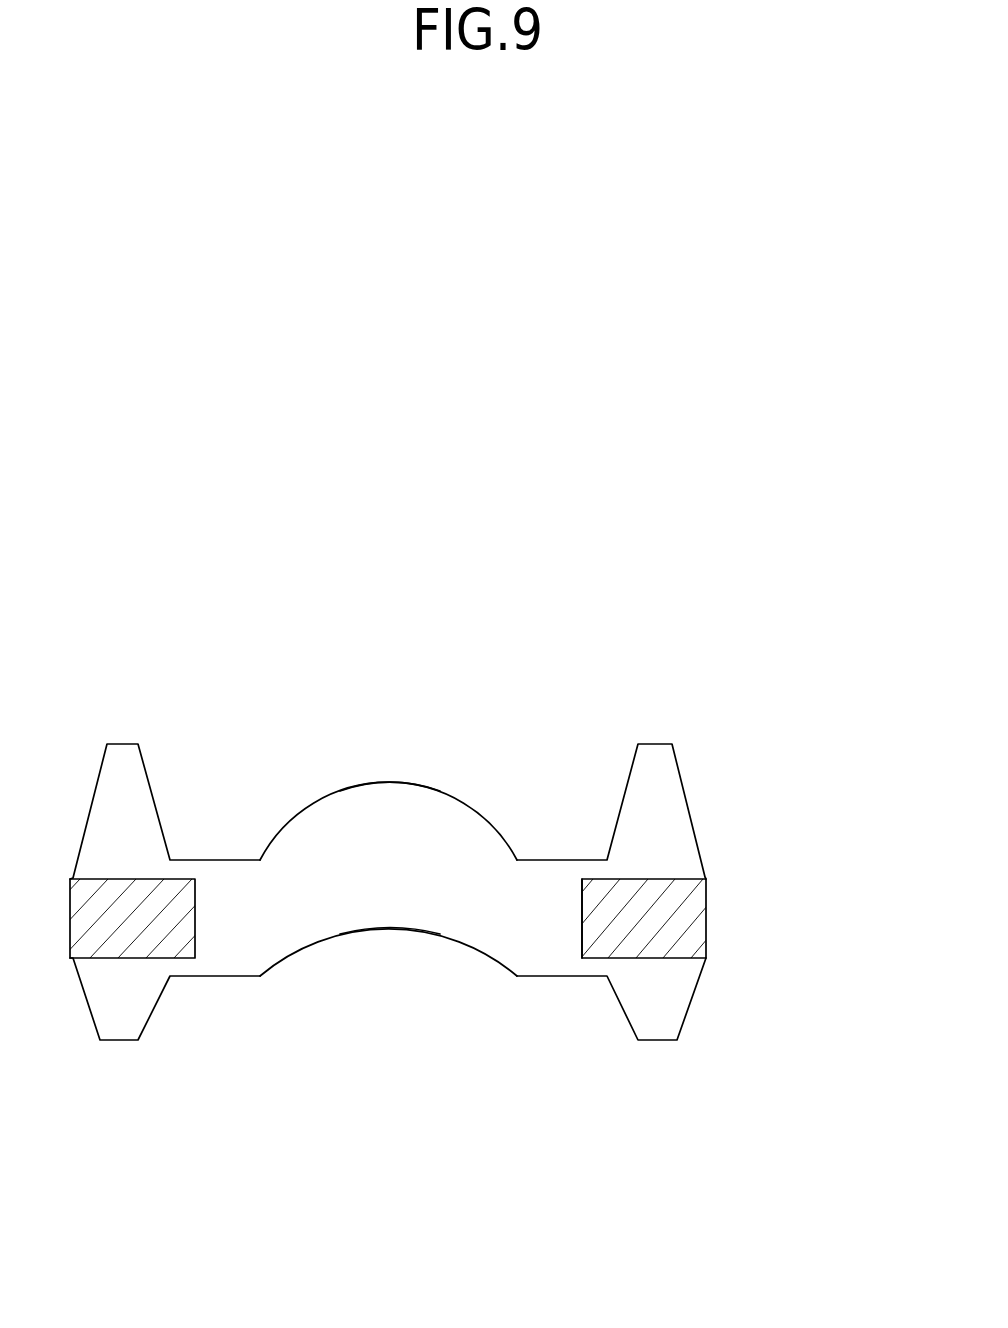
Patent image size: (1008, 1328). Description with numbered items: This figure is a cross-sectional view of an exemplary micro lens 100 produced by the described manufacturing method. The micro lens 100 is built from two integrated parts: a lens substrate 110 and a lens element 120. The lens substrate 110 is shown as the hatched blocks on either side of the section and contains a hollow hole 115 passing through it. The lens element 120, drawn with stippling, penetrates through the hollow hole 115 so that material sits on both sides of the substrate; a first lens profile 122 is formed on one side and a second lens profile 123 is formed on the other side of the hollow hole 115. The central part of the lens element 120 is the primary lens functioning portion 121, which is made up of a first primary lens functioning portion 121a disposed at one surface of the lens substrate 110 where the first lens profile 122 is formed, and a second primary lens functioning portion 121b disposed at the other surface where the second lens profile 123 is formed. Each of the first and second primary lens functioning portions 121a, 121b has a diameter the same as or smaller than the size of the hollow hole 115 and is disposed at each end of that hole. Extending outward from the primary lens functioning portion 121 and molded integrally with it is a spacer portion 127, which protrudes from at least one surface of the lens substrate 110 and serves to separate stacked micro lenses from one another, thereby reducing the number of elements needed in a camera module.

The micro lens 100 is at (753, 715).
The lens substrate 110 is at (670, 925).
The hollow hole 115 is at (582, 923).
The lens element 120 is at (340, 1177).
The primary lens functioning portion 121 is at (428, 1113).
The first primary lens functioning portion 121a is at (375, 805).
The second primary lens functioning portion 121b is at (398, 897).
The first lens profile 122 is at (391, 782).
The second lens profile 123 is at (458, 942).
The spacer portion 127 is at (120, 1020).